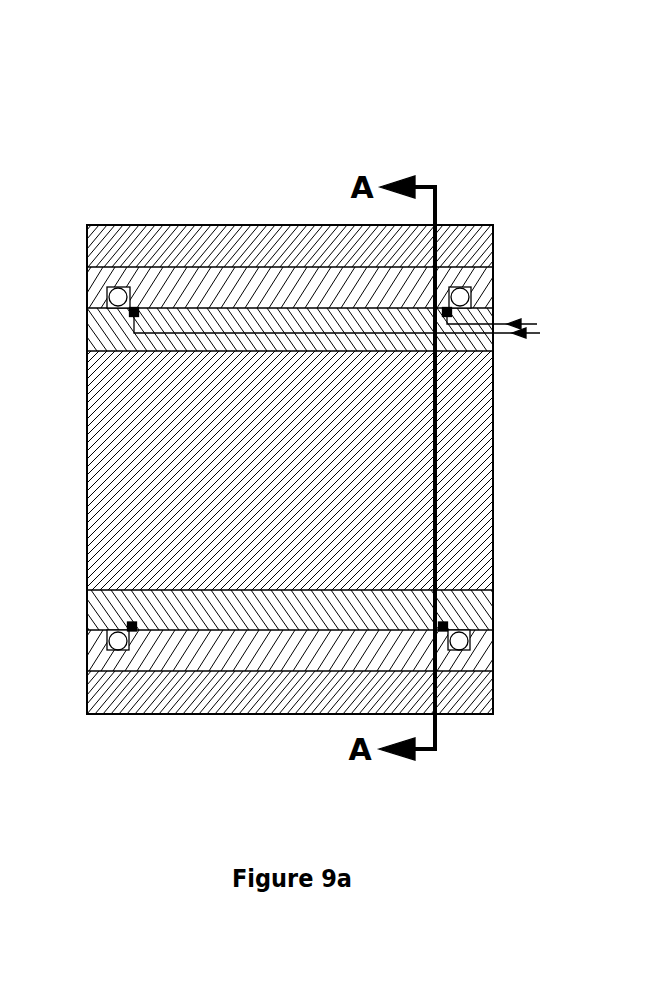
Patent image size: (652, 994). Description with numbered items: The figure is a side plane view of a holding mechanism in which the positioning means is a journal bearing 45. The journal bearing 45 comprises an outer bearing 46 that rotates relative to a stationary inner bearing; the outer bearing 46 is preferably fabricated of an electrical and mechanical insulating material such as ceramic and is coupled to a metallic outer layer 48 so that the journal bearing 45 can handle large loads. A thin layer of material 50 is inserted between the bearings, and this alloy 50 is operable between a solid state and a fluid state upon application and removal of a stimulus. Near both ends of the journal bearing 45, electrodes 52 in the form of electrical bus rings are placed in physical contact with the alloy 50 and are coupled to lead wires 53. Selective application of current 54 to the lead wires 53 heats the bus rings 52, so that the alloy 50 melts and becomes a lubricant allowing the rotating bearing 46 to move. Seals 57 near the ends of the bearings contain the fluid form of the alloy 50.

The journal bearing 45 is at (22, 179).
The outer bearing 46 is at (247, 273).
The outer layer 48 is at (203, 237).
The thin layer of material 50 is at (289, 308).
The electrodes 52 is at (135, 311).
The lead wires 53 is at (537, 324).
The current 54 is at (515, 318).
The seals 57 is at (466, 289).